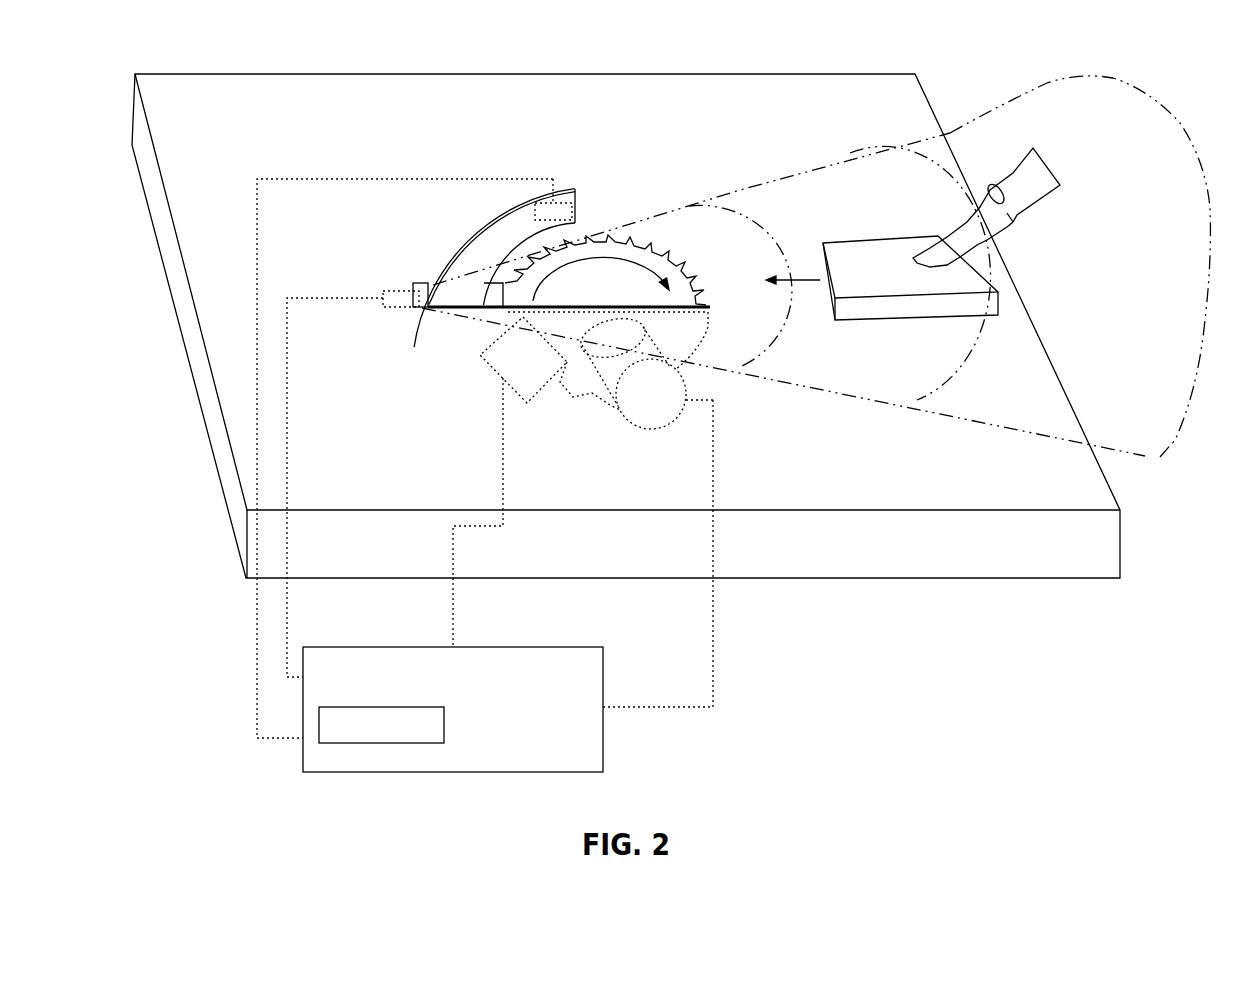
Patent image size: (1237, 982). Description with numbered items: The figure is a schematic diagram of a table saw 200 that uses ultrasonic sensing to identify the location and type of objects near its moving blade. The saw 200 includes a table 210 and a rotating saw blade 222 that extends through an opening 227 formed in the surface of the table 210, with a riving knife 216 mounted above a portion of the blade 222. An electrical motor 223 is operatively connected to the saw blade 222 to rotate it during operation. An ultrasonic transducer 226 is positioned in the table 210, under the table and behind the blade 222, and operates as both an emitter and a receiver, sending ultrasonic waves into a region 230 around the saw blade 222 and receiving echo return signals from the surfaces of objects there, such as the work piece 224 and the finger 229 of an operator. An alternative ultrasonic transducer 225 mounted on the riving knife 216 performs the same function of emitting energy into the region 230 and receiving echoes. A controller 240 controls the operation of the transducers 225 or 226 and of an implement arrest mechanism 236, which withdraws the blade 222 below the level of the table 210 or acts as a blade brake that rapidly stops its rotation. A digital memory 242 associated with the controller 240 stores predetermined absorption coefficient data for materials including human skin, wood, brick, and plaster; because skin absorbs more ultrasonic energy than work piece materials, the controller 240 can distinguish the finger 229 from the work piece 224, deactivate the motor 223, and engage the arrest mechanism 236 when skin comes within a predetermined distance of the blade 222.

The table saw 200 is at (903, 640).
The table 210 is at (390, 75).
The riving knife 216 is at (442, 258).
The saw blade 222 is at (707, 281).
The electrical motor 223 is at (687, 388).
The work piece 224 is at (823, 243).
The ultrasonic transducer 225 is at (562, 203).
The ultrasonic transducer 226 is at (395, 289).
The opening 227 is at (487, 281).
The finger 229 is at (985, 195).
The region 230 is at (1015, 93).
The implement arrest mechanism 236 is at (480, 356).
The controller 240 is at (510, 647).
The digital memory 242 is at (444, 733).